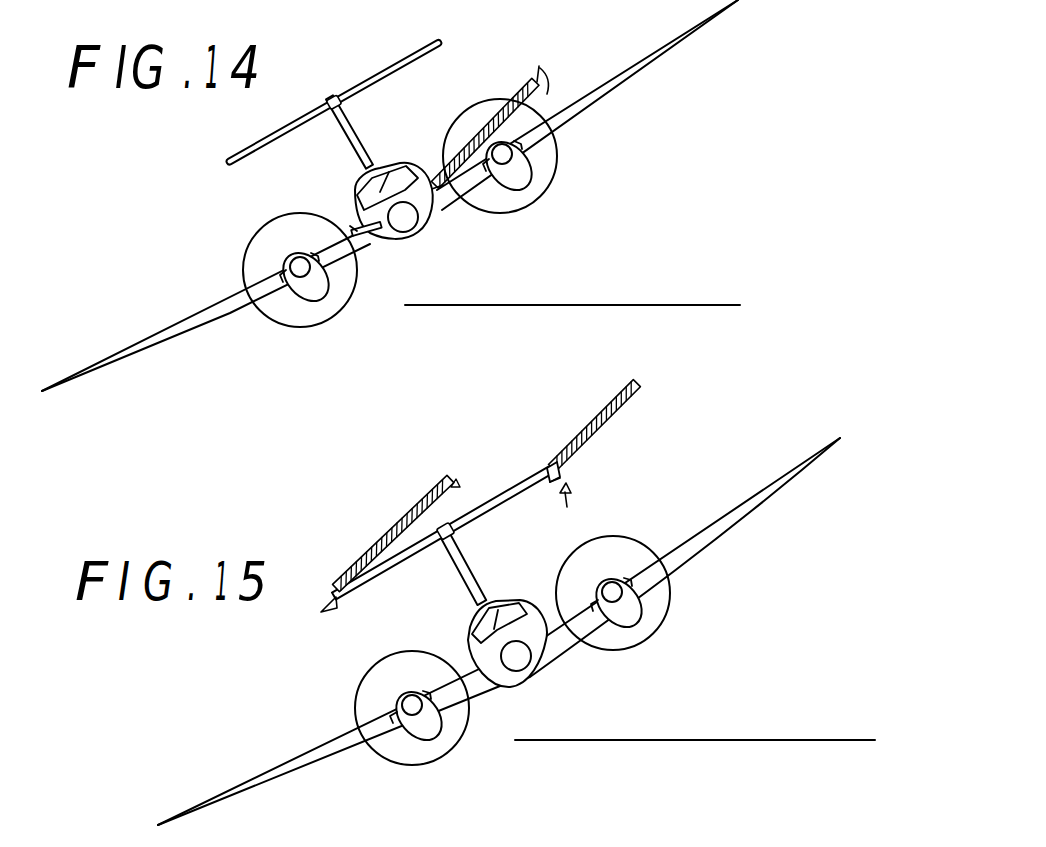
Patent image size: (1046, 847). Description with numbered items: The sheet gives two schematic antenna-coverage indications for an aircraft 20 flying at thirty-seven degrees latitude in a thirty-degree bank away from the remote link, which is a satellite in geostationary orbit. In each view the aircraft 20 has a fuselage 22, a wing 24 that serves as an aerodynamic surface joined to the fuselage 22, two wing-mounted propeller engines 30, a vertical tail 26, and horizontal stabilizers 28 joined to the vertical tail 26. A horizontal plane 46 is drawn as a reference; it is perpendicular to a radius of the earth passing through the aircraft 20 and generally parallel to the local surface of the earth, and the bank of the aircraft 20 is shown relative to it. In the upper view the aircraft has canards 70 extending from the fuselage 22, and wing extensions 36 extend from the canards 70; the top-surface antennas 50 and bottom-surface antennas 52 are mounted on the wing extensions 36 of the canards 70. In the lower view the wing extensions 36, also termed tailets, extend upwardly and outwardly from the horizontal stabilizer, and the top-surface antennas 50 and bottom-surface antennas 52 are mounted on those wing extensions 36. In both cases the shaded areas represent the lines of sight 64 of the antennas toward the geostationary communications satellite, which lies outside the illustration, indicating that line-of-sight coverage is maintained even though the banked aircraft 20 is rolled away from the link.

In FIG. 14, the aircraft 20 is at (196, 187).
In FIG. 15, the aircraft 20 is at (285, 671).
In FIG. 14, the fuselage 22 is at (400, 241).
In FIG. 15, the fuselage 22 is at (538, 653).
In FIG. 14, the wing 24 is at (176, 328).
In FIG. 15, the wing 24 is at (270, 781).
In FIG. 14, the vertical tail 26 is at (360, 116).
In FIG. 15, the vertical tail 26 is at (463, 551).
In FIG. 14, the horizontal stabilizers 28 is at (406, 52).
In FIG. 15, the horizontal stabilizers 28 is at (486, 508).
In FIG. 14, the wing-mounted propeller engines 30 is at (292, 260).
In FIG. 15, the wing-mounted propeller engines 30 is at (432, 696).
In FIG. 15, the wing extensions 36 is at (320, 611).
In FIG. 14, the horizontal plane 46 is at (634, 304).
In FIG. 15, the horizontal plane 46 is at (686, 740).
In FIG. 14, the top-surface antenna 50 is at (352, 222).
In FIG. 15, the top-surface antenna 50 is at (546, 474).
In FIG. 14, the bottom-surface antenna 52 is at (356, 238).
In FIG. 15, the bottom-surface antenna 52 is at (564, 472).
In FIG. 14, the lines of sight 64 is at (538, 86).
In FIG. 15, the lines of sight 64 is at (596, 422).
In FIG. 14, the canards 70 is at (441, 193).